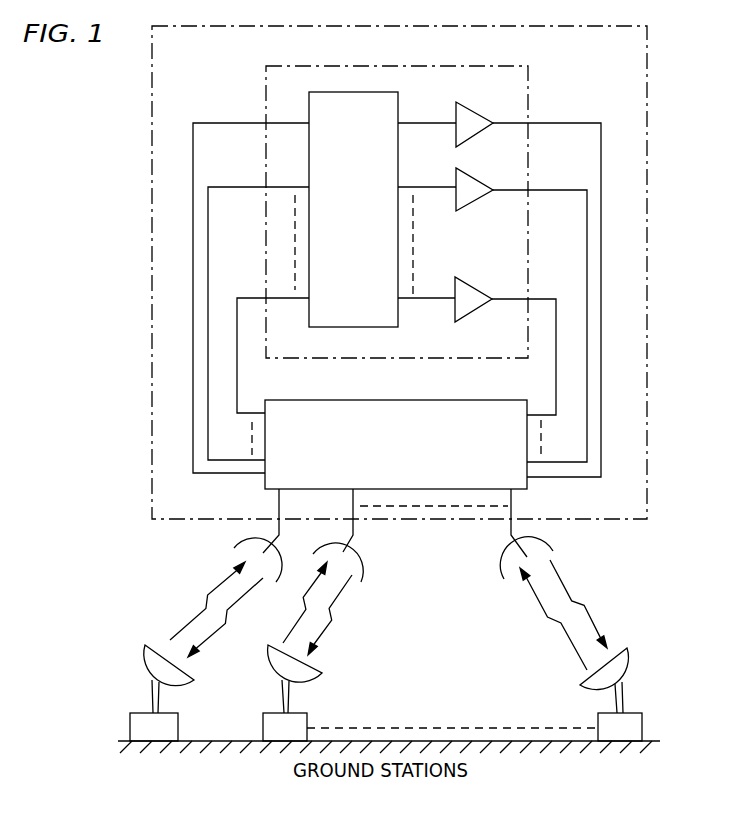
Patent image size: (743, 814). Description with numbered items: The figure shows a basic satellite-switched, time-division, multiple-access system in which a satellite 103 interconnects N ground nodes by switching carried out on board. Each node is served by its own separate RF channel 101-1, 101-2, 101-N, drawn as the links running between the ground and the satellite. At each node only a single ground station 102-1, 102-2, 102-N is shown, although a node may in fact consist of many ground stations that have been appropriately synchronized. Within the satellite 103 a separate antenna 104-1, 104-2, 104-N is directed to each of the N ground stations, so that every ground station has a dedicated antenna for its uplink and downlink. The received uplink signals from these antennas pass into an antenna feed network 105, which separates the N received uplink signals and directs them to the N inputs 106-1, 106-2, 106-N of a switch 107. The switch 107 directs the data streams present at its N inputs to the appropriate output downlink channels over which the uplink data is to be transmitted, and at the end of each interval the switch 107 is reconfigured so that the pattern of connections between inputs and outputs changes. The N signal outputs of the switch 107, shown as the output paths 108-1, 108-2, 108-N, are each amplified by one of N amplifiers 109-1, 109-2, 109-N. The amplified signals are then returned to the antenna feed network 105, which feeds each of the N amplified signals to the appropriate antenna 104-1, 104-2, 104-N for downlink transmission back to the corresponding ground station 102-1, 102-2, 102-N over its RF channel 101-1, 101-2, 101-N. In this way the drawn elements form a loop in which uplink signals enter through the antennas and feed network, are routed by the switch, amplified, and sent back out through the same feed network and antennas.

The RF channel 101-1 is at (205, 604).
The RF channel 101-2 is at (332, 616).
The RF channel 101-N is at (581, 615).
The ground station 102-1 is at (130, 724).
The ground station 102-2 is at (263, 727).
The ground station 102-N is at (645, 730).
The satellite 103 is at (645, 200).
The antenna 104-1 is at (231, 535).
The antenna 104-2 is at (361, 535).
The antenna 104-N is at (555, 534).
The antenna feed network 105 is at (528, 486).
The switch input 106-1 is at (247, 121).
The switch input 106-2 is at (228, 185).
The switch input 106-N is at (245, 295).
The switch 107 is at (357, 92).
The switch output path 1 108-1 is at (424, 118).
The switch output path 2 108-2 is at (426, 186).
The switch output path N 108-N is at (428, 296).
The amplifier 109-1 is at (470, 102).
The amplifier 109-2 is at (475, 186).
The amplifier 109-N is at (478, 290).